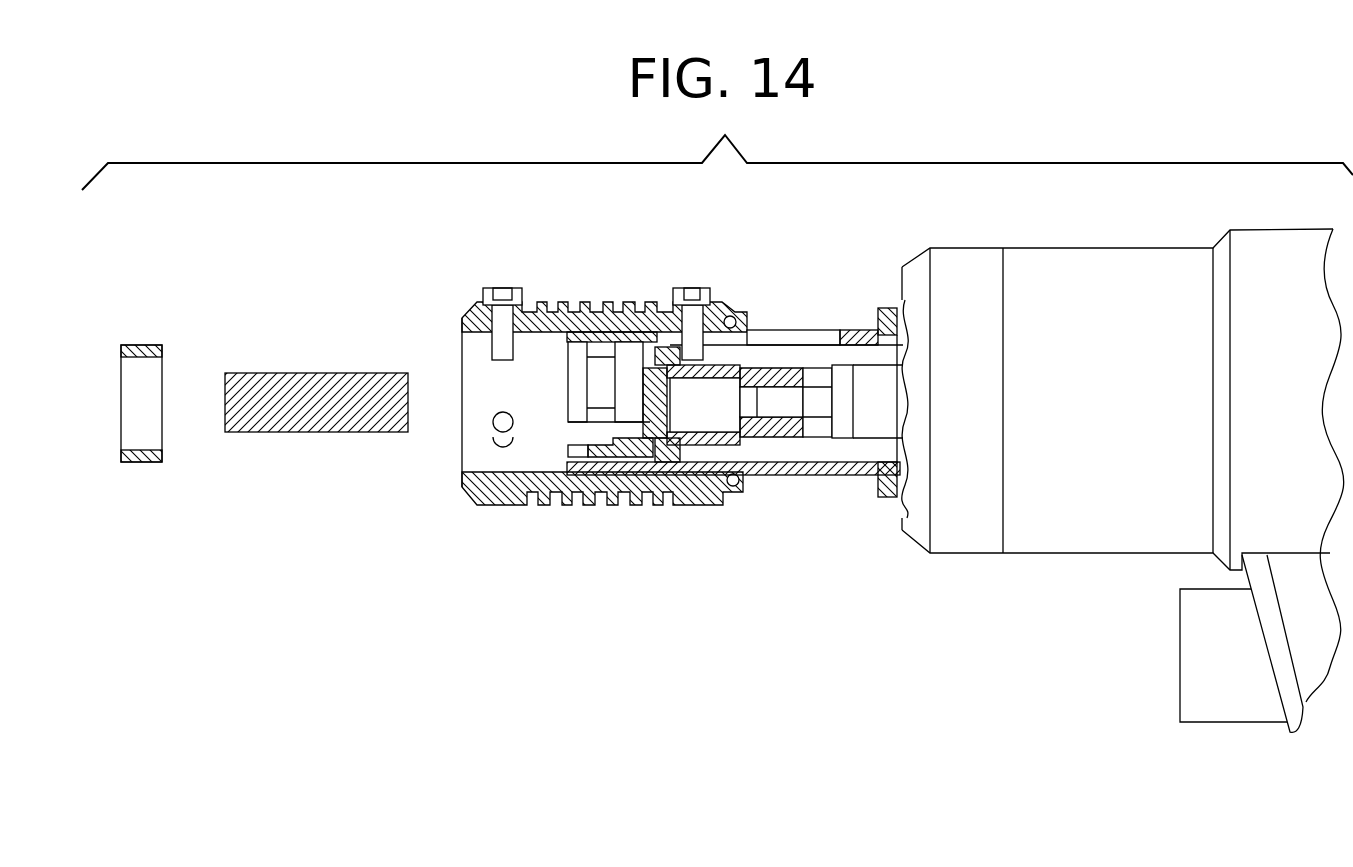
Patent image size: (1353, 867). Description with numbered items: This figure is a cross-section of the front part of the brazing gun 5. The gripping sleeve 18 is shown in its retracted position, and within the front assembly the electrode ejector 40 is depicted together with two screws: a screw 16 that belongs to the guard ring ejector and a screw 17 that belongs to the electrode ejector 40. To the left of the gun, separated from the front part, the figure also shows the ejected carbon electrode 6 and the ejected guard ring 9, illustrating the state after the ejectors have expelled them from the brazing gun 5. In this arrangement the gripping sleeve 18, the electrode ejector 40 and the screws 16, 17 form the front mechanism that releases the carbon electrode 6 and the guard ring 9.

The brazing gun 5 is at (1066, 530).
The carbon electrode 6 is at (312, 418).
The guard ring 9 is at (140, 462).
The screw 16 is at (500, 312).
The screw 17 is at (693, 307).
The gripping sleeve 18 is at (512, 493).
The electrode ejector 40 is at (652, 398).